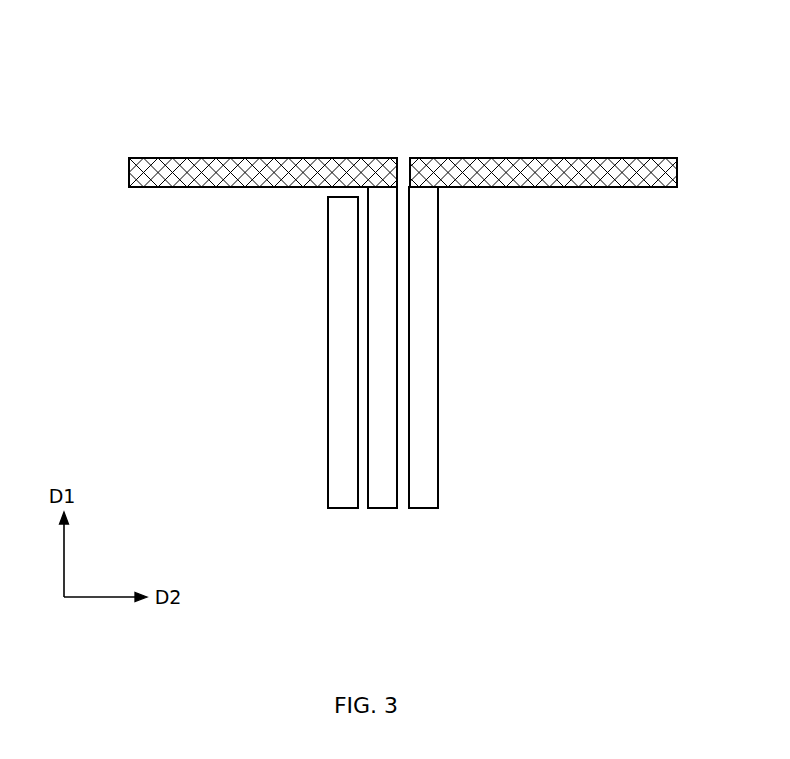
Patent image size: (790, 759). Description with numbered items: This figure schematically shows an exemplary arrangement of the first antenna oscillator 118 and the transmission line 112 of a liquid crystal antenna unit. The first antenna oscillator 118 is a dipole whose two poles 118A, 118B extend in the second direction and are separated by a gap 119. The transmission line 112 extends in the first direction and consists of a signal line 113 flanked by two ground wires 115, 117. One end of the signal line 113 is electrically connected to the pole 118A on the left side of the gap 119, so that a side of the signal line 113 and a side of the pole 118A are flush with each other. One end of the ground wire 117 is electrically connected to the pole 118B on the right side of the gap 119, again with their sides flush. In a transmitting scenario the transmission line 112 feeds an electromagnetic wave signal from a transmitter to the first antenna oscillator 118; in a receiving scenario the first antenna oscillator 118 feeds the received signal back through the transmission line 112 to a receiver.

The transmission line 112 is at (407, 415).
The signal line 113 is at (383, 490).
The ground wire 115 is at (337, 490).
The ground wire 117 is at (447, 386).
The first antenna oscillator 118 is at (397, 109).
The pole 118A is at (331, 168).
The pole 118B is at (470, 168).
The gap 119 is at (403, 170).